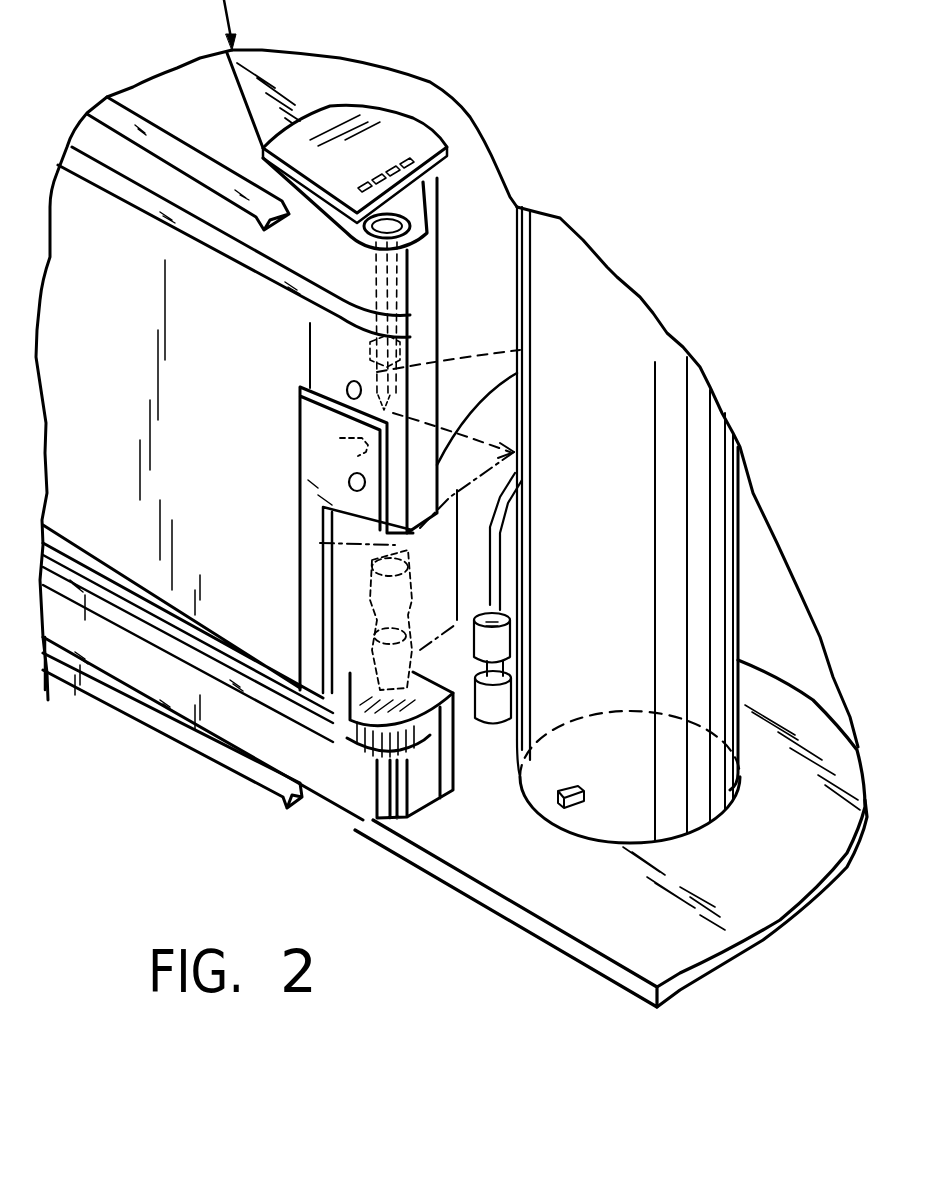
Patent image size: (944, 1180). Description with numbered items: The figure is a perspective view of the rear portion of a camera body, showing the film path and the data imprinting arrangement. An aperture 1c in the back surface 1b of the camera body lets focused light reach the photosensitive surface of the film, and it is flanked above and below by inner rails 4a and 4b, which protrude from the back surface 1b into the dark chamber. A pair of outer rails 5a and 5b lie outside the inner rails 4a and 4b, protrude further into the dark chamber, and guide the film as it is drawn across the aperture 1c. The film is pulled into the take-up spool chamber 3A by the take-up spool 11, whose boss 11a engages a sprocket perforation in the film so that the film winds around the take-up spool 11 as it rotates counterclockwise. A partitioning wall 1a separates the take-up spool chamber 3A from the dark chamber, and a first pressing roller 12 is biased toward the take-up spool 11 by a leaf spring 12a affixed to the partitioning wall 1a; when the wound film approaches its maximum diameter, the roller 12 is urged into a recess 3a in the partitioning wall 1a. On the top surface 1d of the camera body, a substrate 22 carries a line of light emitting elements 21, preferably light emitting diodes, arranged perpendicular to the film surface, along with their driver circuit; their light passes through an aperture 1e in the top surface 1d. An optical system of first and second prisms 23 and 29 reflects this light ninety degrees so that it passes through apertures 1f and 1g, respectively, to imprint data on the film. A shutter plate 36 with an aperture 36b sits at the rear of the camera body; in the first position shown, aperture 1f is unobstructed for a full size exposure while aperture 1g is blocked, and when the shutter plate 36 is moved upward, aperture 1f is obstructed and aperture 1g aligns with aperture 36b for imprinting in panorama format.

The partitioning wall 1a is at (436, 262).
The back surface 1b is at (310, 343).
The aperture 1c is at (105, 570).
The top surface 1d is at (180, 75).
The aperture 1e is at (448, 188).
The aperture 1f is at (350, 388).
The aperture 1g is at (340, 445).
The take-up spool chamber 3A is at (758, 574).
The recess 3a is at (362, 718).
The inner rail 4a is at (140, 215).
The inner rail 4b is at (157, 637).
The outer rail 5a is at (107, 100).
The outer rail 5b is at (227, 763).
The take-up spool 11 is at (645, 318).
The boss 11a is at (567, 806).
The first pressing roller 12 is at (508, 562).
The leaf spring 12a is at (320, 543).
The light emitting elements 21 is at (388, 165).
The substrate 22 is at (341, 118).
The first prism 23 is at (515, 352).
The second prism 29 is at (512, 450).
The shutter plate 36 is at (310, 580).
The aperture 36b is at (352, 483).